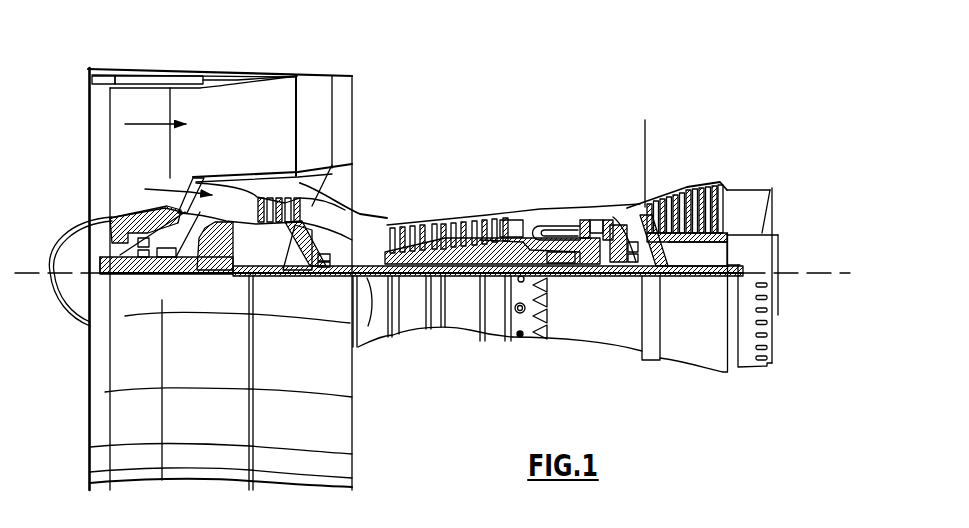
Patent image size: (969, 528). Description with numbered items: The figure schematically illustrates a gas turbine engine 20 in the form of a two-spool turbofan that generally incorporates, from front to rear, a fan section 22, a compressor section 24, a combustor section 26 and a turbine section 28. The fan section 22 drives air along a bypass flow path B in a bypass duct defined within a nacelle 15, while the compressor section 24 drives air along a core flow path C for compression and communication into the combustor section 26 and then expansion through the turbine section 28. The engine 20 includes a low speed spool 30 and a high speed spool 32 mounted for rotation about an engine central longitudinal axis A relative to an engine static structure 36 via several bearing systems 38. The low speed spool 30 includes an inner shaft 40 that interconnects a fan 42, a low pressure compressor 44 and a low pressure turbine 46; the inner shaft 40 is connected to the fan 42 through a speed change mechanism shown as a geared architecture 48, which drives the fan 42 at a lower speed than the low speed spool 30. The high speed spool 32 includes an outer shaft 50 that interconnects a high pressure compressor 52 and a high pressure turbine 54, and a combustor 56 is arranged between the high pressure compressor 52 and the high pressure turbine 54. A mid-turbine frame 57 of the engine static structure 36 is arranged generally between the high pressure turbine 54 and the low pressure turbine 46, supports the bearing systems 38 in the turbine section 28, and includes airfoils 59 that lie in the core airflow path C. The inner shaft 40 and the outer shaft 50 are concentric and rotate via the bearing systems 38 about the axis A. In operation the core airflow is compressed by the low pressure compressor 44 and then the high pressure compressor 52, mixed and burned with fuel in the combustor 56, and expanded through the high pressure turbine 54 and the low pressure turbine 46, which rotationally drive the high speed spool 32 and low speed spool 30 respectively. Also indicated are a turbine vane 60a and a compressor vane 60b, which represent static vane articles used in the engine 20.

The gas turbine engine 20 is at (558, 103).
The fan section 22 is at (169, 58).
The nacelle 15 is at (220, 72).
The fan 42 is at (155, 163).
The compressor section 24 is at (384, 197).
The low pressure compressor 44 is at (334, 168).
The combustor section 26 is at (549, 195).
The turbine section 28 is at (656, 170).
The low speed spool 30 is at (462, 290).
The high speed spool 32 is at (496, 232).
The engine static structure 36 is at (494, 343).
The bearing systems 38 is at (321, 266).
The inner shaft 40 is at (368, 328).
The low pressure turbine 46 is at (688, 187).
The geared architecture 48 is at (222, 260).
The outer shaft 50 is at (553, 268).
The high pressure compressor 52 is at (448, 252).
The high pressure turbine 54 is at (629, 209).
The combustor 56 is at (550, 232).
The mid-turbine frame 57 is at (612, 217).
The airfoils 59 is at (643, 242).
The turbine vane 60a is at (645, 122).
The compressor vane 60b is at (483, 222).
The engine central longitudinal axis A is at (838, 273).
The bypass flow path B is at (147, 122).
The core flow path C is at (172, 190).